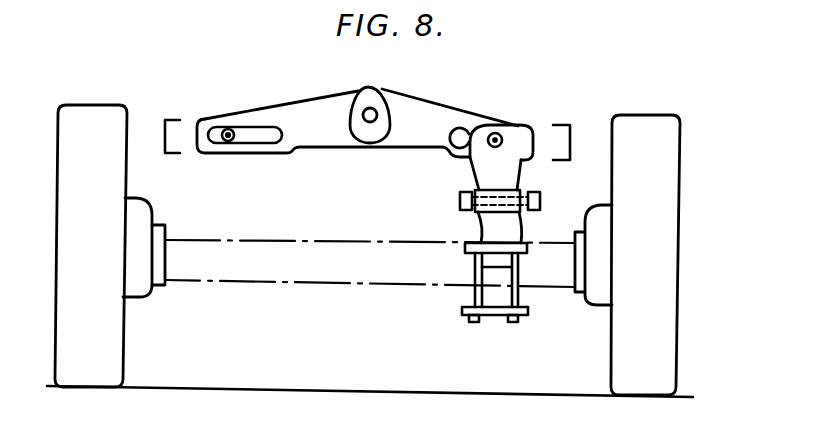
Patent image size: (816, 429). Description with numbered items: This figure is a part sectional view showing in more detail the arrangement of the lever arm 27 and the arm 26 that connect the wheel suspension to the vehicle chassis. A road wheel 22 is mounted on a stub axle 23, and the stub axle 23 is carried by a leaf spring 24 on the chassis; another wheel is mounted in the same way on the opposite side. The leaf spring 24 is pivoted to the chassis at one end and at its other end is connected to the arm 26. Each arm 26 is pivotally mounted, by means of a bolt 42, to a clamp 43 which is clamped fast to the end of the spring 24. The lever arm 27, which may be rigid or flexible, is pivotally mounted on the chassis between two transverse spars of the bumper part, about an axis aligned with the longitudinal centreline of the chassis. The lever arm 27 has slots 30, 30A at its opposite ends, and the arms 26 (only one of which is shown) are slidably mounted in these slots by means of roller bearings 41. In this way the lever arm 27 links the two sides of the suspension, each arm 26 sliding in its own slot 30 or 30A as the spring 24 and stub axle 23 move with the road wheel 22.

The road wheel 22 is at (642, 116).
The stub axle 23 is at (330, 274).
The leaf spring 24 is at (498, 288).
The arm 26 is at (508, 166).
The lever arm 27 is at (325, 100).
The slot 30 is at (254, 138).
The slot 30A is at (459, 129).
The roller bearing 41 is at (500, 134).
The bolt 42 is at (524, 224).
The clamp 43 is at (490, 236).